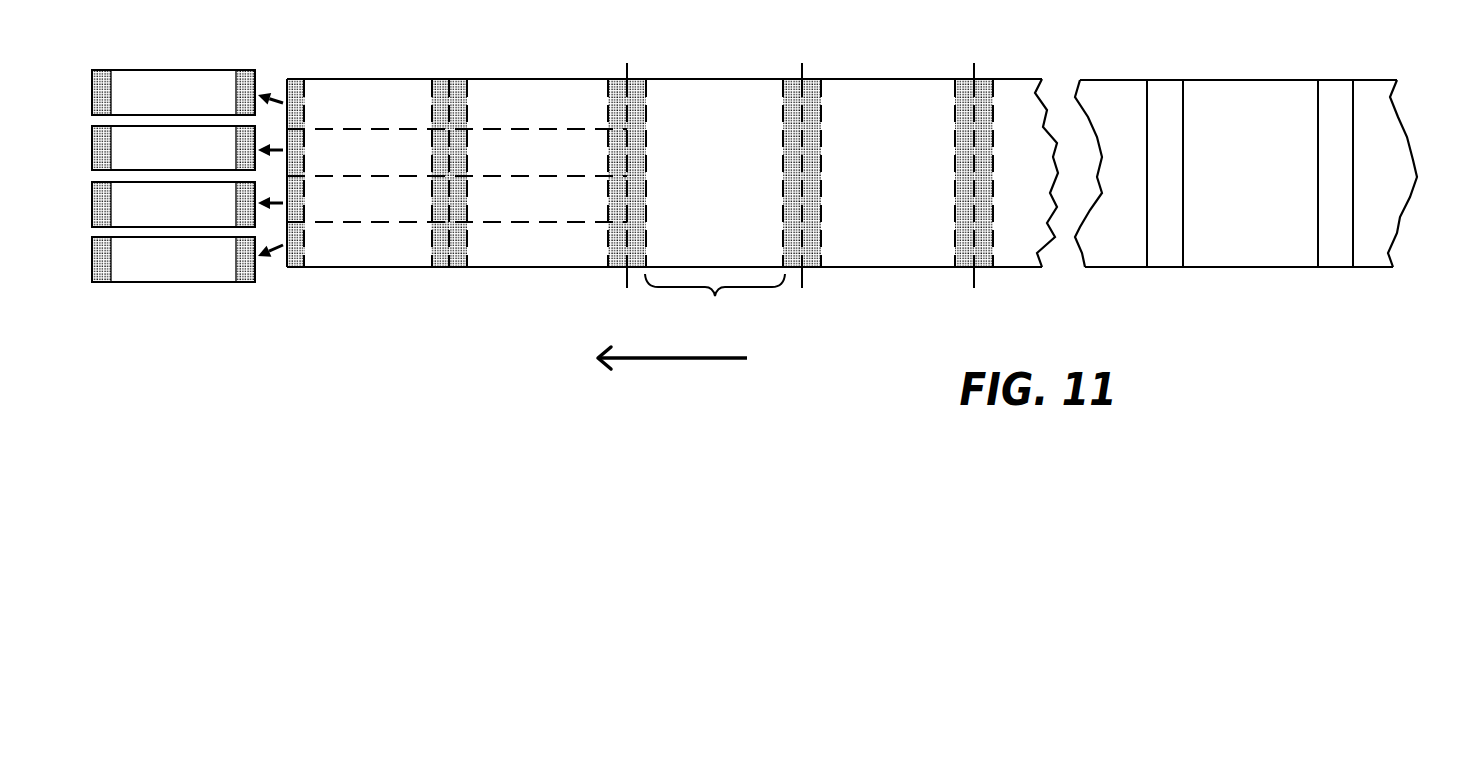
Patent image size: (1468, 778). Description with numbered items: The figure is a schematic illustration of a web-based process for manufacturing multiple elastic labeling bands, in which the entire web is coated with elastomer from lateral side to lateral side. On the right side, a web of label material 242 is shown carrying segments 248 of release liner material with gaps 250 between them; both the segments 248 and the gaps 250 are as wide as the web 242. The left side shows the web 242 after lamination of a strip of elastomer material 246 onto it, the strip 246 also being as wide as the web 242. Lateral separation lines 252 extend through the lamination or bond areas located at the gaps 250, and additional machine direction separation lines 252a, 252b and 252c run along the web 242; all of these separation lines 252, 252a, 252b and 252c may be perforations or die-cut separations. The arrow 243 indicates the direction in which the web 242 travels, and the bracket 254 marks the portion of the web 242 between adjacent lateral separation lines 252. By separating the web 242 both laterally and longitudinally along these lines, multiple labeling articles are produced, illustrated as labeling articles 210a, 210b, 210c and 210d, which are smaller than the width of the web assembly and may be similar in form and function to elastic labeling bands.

The labeling article 210a is at (187, 92).
The labeling article 210b is at (187, 148).
The labeling article 210c is at (187, 204).
The labeling article 210d is at (187, 259).
The web of label material 242 is at (872, 253).
The direction of web travel 243 is at (697, 360).
The strip of elastomer material 246 is at (890, 93).
The segments of release liner material 248 is at (1116, 93).
The gaps 250 is at (1167, 257).
The lateral separation lines 252 is at (604, 100).
The machine direction separation line 252a is at (475, 114).
The machine direction separation line 252b is at (475, 163).
The machine direction separation line 252c is at (475, 209).
The gap between stripes 254 is at (715, 303).